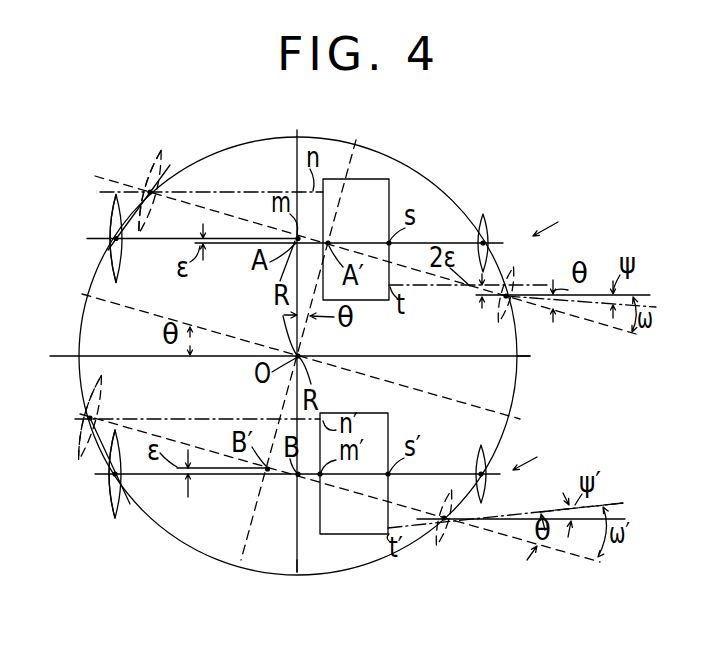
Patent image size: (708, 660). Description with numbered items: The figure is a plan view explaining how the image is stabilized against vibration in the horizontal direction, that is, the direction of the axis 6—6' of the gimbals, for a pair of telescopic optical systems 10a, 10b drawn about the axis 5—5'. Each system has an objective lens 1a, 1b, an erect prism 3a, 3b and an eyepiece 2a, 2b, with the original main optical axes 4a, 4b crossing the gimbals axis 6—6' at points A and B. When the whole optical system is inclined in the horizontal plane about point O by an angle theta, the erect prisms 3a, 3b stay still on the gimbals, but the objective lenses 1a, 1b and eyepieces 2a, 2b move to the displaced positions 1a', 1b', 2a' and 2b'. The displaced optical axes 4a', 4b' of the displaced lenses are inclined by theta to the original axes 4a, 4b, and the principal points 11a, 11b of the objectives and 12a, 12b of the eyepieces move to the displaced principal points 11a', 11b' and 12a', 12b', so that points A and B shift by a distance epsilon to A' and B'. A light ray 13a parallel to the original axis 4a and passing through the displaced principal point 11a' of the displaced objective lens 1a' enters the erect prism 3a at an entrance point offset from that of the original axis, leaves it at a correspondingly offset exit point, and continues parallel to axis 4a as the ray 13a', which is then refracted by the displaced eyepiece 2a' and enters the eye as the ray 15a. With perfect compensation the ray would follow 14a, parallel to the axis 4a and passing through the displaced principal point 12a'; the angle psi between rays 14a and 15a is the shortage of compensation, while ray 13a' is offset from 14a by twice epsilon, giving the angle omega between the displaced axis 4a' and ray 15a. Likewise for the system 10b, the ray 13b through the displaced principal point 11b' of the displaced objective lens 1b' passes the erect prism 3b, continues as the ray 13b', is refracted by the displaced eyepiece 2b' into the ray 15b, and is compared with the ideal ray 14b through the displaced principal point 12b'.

The objective lens 1a is at (110, 207).
The displaced objective lens 1a′ is at (152, 178).
The original main optical axis 4a is at (95, 244).
The displaced optical axis 4a′ is at (130, 187).
The principal point of objective lens 11a is at (119, 241).
The displaced principal point of objective lens 11a′ is at (152, 203).
The light ray 13a is at (226, 190).
The erect prism 3a is at (377, 200).
The eyepiece 2a is at (483, 214).
The displaced eyepiece 2a′ is at (517, 275).
The principal point of eyepiece 12a is at (488, 240).
The displaced principal point of eyepiece 12a′ is at (503, 300).
The telescopic optical system 10a is at (566, 220).
The light ray 13a′ is at (420, 287).
The light ray 14a is at (640, 294).
The light ray 15a is at (602, 320).
The objective lens 1b is at (106, 502).
The displaced objective lens 1b′ is at (93, 405).
The original main optical axis 4b is at (98, 478).
The displaced optical axis 4b′ is at (88, 426).
The principal point of objective lens 11b is at (122, 480).
The displaced principal point of objective lens 11b′ is at (97, 412).
The light ray 13b is at (168, 417).
The erect prism 3b is at (345, 536).
The eyepiece 2b is at (482, 452).
The displaced eyepiece 2b′ is at (443, 540).
The principal point of eyepiece 12b is at (488, 478).
The displaced principal point of eyepiece 12b′ is at (447, 516).
The telescopic optical system 10b is at (545, 453).
The light ray 13b′ is at (417, 528).
The light ray 14b is at (624, 519).
The light ray 15b is at (616, 502).
The axis 5 is at (286, 351).
The axis end 5′ is at (535, 352).
The axis of the gimbals 6 is at (297, 337).
The axis end 6′ is at (297, 581).